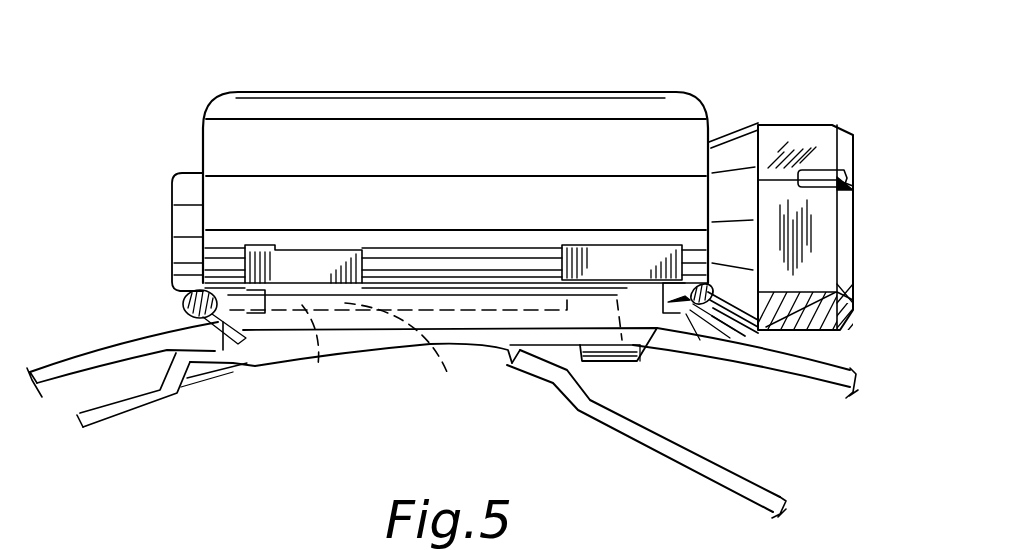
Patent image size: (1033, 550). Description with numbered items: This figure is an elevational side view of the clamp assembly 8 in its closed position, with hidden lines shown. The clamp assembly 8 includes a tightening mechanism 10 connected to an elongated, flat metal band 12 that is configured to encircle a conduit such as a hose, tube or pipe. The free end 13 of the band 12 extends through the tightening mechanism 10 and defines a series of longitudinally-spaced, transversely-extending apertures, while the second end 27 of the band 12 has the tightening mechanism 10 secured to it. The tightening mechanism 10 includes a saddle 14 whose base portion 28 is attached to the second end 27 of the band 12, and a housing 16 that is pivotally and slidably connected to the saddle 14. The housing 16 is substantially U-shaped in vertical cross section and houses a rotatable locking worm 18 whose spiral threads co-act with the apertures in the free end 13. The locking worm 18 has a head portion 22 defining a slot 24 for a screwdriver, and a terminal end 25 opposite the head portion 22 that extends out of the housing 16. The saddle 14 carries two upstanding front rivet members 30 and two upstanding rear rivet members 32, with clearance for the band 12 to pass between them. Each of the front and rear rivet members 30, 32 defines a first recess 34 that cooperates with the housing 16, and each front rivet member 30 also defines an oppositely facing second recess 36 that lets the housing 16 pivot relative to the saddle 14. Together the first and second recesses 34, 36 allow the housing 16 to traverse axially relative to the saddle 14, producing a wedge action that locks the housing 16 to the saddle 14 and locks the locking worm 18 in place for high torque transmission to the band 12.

The clamp assembly 8 is at (165, 97).
The tightening mechanism 10 is at (173, 199).
The band 12 is at (718, 460).
The free end 13 is at (815, 383).
The saddle 14 is at (652, 347).
The housing 16 is at (335, 113).
The locking worm 18 is at (736, 157).
The head portion 22 is at (900, 228).
The slot 24 is at (893, 166).
The terminal end 25 is at (185, 223).
The second end 27 is at (207, 350).
The base portion 28 is at (410, 338).
The front rivet members 30 is at (313, 343).
The rear rivet members 32 is at (622, 340).
The first recess 34 is at (458, 360).
The second recess 36 is at (266, 303).